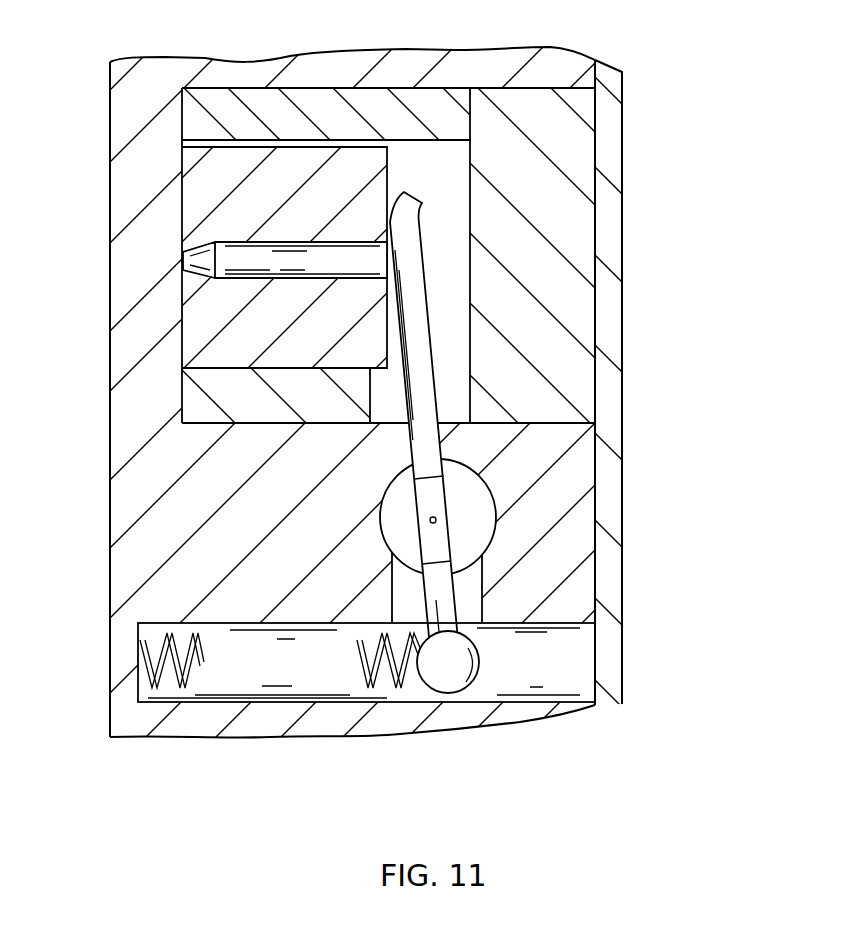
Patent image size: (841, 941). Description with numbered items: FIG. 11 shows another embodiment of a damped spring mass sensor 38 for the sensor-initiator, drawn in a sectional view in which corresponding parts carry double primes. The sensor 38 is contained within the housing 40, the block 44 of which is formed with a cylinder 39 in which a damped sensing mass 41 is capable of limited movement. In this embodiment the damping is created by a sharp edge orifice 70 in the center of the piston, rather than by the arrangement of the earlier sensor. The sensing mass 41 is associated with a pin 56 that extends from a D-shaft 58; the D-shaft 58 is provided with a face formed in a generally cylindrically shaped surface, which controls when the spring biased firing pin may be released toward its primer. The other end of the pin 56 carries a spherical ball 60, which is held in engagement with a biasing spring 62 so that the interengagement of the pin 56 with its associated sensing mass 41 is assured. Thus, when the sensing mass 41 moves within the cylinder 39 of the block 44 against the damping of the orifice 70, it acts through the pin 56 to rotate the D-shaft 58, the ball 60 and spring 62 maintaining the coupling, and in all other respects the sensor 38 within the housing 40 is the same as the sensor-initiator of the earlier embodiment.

The damped sensor 38 is at (392, 89).
The cylinder 39 is at (428, 143).
The housing 40 is at (623, 388).
The damped sensing mass 41 is at (287, 327).
The block 44 is at (123, 447).
The pin 56 is at (440, 379).
The D-shaft 58 is at (395, 521).
The spherical ball 60 is at (478, 655).
The biasing spring 62 is at (360, 655).
The sharp edge orifice 70 is at (182, 257).